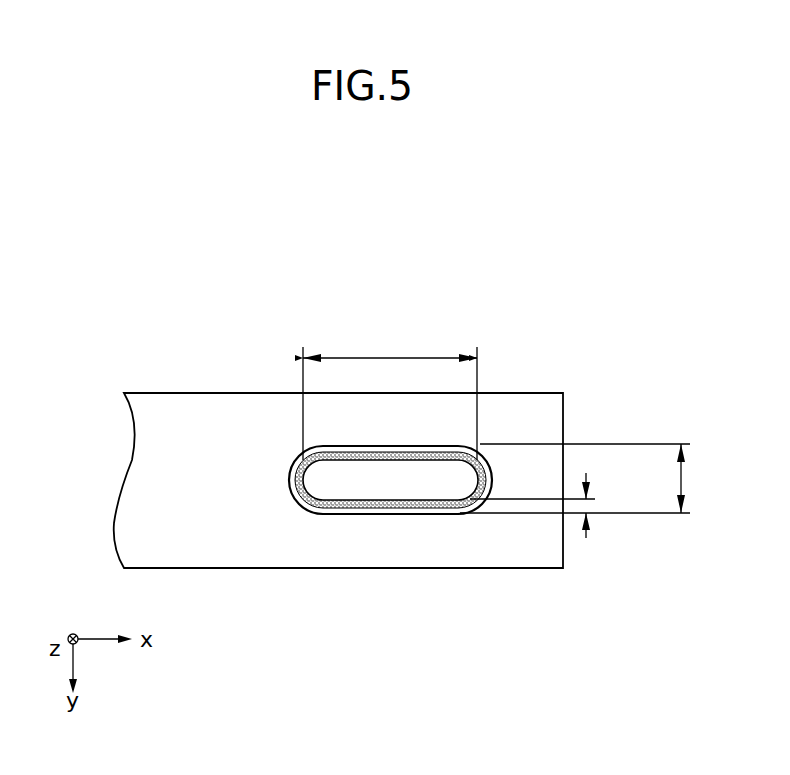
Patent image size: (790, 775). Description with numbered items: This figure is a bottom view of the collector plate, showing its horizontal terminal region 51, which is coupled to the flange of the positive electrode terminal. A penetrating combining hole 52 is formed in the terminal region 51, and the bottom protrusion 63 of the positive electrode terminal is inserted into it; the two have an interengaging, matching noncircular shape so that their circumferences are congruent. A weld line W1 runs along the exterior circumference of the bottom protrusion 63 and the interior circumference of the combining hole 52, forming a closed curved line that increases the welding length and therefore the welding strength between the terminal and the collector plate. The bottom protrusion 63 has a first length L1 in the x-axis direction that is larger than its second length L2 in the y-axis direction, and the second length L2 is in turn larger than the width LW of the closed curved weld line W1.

The terminal region 51 is at (258, 540).
The combining hole 52 is at (348, 505).
The bottom protrusion 63 is at (445, 488).
The weld line W1 is at (402, 503).
The first length L1 is at (390, 389).
The second length L2 is at (595, 478).
The width of the closed curved weld line LW is at (555, 505).